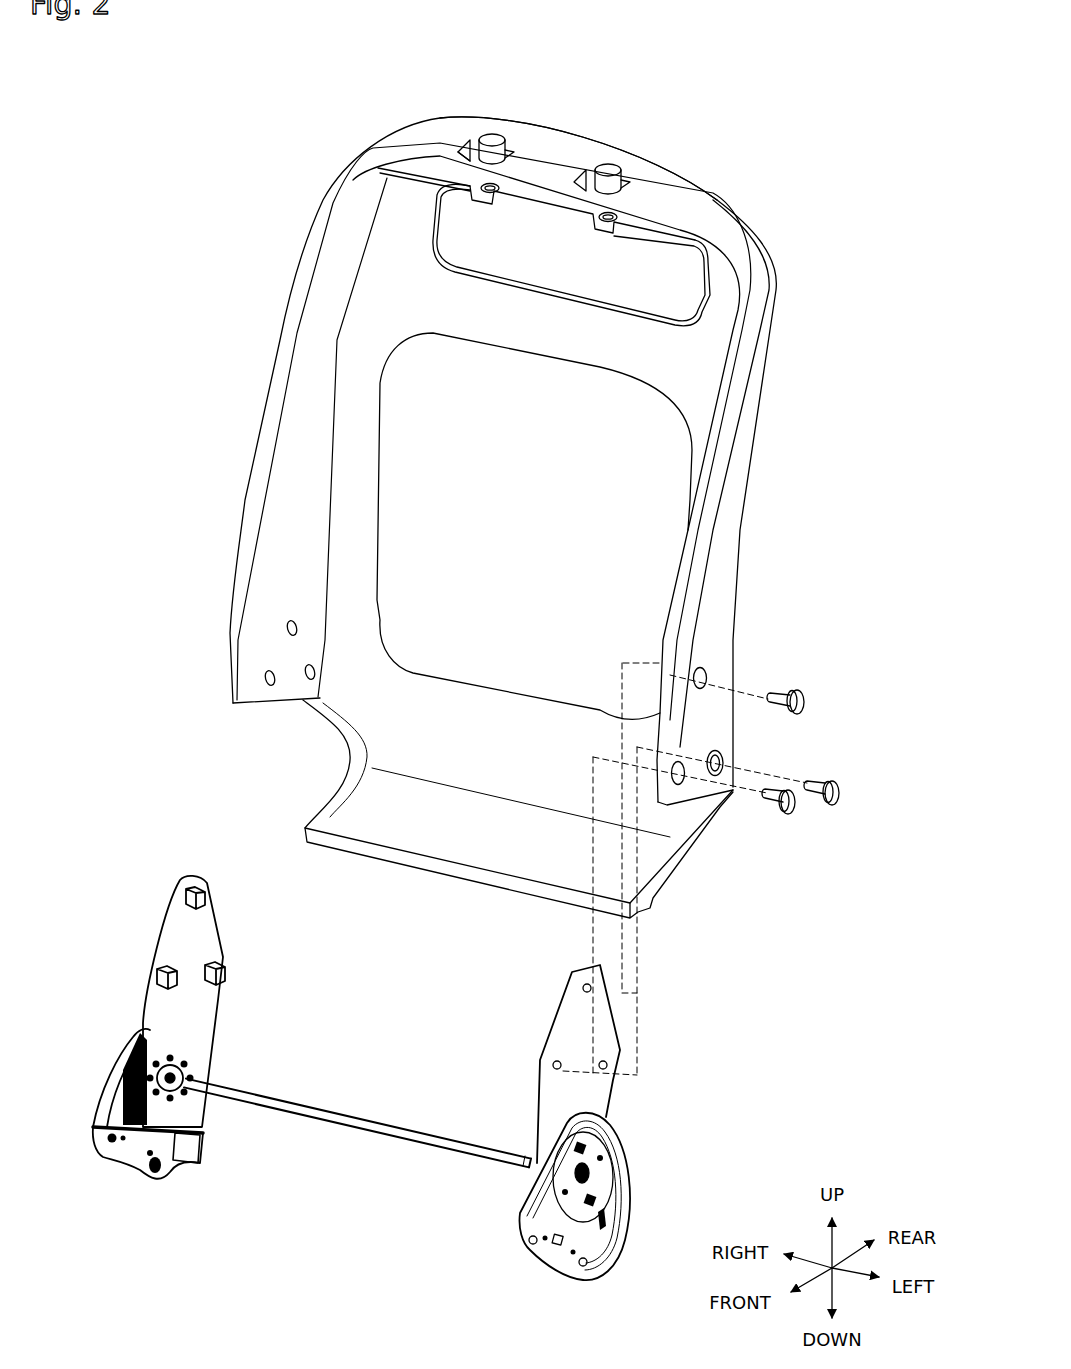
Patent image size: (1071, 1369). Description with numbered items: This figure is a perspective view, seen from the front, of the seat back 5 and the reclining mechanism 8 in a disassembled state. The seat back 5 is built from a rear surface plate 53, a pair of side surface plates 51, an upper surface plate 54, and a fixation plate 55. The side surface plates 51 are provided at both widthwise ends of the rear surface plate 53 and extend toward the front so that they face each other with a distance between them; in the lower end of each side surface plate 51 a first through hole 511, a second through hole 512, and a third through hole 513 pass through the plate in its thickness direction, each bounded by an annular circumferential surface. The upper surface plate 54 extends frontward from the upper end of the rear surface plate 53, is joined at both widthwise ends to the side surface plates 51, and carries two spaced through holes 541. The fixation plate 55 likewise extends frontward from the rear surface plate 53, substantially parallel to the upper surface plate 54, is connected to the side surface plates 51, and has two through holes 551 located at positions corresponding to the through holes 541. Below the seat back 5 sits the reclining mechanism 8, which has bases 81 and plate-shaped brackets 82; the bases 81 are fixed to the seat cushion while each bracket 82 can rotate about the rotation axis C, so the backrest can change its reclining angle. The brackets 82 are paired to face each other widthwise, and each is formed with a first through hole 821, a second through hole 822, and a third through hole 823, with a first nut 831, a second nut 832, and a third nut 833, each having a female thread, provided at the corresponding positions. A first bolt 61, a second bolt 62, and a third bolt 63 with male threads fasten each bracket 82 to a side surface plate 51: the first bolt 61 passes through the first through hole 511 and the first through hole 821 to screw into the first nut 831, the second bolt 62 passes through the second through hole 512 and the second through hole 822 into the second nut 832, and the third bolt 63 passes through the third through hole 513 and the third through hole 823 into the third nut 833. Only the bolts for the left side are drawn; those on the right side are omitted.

The seat back 5 is at (575, 130).
The side surface plate 51 is at (280, 565).
The first through hole 511 is at (268, 686).
The second through hole 512 is at (305, 665).
The third through hole 513 is at (286, 628).
The rear surface plate 53 is at (383, 315).
The upper surface plate 54 is at (541, 160).
The through hole 541 is at (492, 140).
The fixation plate 55 is at (630, 213).
The through hole 551 is at (490, 194).
The first bolt 61 is at (790, 816).
The second bolt 62 is at (838, 806).
The third bolt 63 is at (806, 701).
The reclining mechanism 8 is at (162, 886).
The base 81 is at (113, 1087).
The bracket 82 is at (193, 876).
The first through hole 821 is at (551, 1065).
The second through hole 822 is at (610, 1065).
The third through hole 823 is at (593, 988).
The first nut 831 is at (154, 974).
The second nut 832 is at (228, 977).
The third nut 833 is at (213, 890).
The rotation axis C is at (598, 1172).